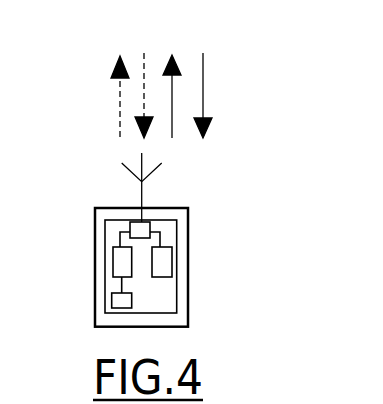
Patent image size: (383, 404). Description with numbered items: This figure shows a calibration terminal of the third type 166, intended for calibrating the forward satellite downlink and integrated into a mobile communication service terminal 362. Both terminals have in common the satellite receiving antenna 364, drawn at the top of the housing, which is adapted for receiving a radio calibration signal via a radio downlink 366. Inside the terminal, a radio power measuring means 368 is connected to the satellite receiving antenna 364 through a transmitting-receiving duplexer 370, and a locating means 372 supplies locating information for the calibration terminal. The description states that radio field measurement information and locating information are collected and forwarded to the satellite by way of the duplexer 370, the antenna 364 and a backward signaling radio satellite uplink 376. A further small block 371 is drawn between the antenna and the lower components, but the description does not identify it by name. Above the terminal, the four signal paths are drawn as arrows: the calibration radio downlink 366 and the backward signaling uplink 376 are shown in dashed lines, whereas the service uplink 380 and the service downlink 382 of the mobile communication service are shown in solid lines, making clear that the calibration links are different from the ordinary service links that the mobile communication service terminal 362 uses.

The calibration terminal of the third type 166 is at (97, 235).
The mobile communication service terminal 362 is at (189, 253).
The satellite receiving antenna 364 is at (142, 200).
The radio downlink 366 is at (144, 69).
The radio power measuring means 368 is at (163, 265).
The transmitting-receiving duplexer 370 is at (120, 265).
The transceiver 371 is at (130, 230).
The locating means 372 is at (120, 302).
The backward signaling radio satellite uplink 376 is at (118, 103).
The service uplink 380 is at (172, 97).
The service downlink 382 is at (203, 97).